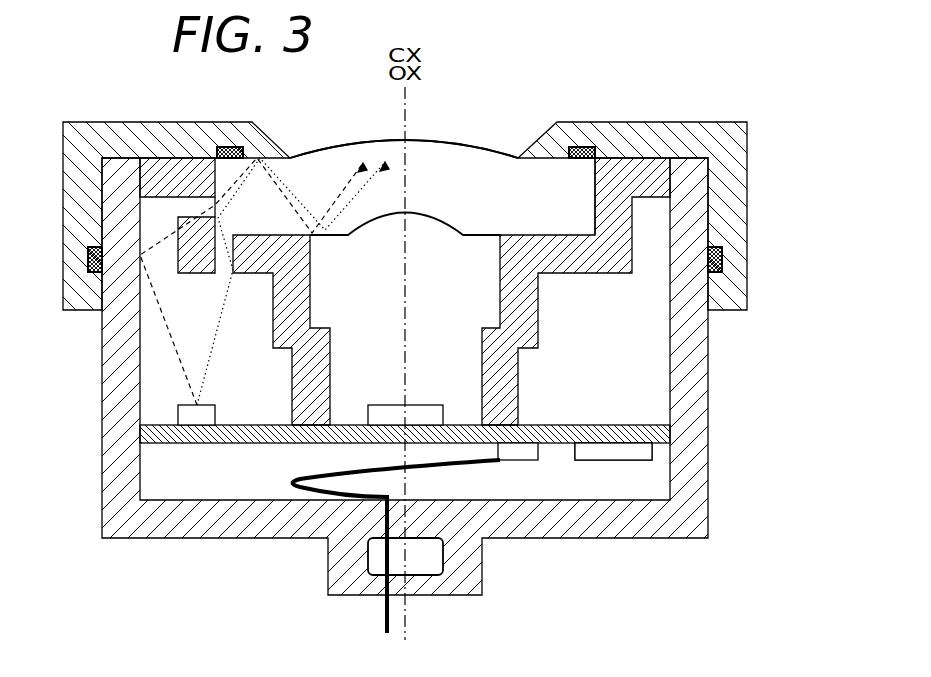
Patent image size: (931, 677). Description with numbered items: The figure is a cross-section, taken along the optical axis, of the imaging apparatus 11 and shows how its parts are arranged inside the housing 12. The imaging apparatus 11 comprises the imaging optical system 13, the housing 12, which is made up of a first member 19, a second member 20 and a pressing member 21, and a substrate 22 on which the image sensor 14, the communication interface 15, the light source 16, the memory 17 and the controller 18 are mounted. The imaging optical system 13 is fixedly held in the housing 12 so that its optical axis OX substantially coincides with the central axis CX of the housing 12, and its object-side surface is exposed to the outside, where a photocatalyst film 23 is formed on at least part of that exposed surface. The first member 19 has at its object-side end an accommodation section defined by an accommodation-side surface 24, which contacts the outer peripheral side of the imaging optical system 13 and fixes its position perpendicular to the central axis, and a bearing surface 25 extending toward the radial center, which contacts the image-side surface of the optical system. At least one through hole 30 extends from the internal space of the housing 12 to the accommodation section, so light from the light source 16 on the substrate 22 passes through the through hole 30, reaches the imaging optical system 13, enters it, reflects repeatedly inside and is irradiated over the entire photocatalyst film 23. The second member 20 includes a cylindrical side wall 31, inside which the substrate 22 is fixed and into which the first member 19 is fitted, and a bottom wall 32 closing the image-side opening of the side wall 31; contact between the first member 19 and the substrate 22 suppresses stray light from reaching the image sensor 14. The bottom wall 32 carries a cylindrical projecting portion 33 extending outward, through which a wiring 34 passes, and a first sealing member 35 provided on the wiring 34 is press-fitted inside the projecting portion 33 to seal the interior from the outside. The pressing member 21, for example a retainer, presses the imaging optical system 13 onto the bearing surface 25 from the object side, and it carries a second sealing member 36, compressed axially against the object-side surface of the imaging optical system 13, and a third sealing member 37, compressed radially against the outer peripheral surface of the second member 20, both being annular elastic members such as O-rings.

The imaging apparatus 11 is at (686, 42).
The housing 12 is at (812, 282).
The imaging optical system 13 is at (454, 195).
The image sensor 14 is at (437, 403).
The communication interface 15 is at (520, 462).
The light source 16 is at (208, 404).
The memory 17 is at (587, 462).
The controller 18 is at (613, 451).
The first member 19 is at (530, 333).
The second member 20 is at (700, 405).
The pressing member 21 is at (740, 292).
The substrate 22 is at (215, 444).
The photocatalyst film 23 is at (477, 143).
The accommodation-side surface 24 is at (595, 178).
The bearing surface 25 is at (548, 235).
The through hole 30 is at (200, 216).
The side wall 31 is at (102, 360).
The bottom wall 32 is at (207, 540).
The projecting portion 33 is at (473, 570).
The wiring 34 is at (385, 612).
The first sealing member 35 is at (423, 570).
The second sealing member 36 is at (230, 147).
The third sealing member 37 is at (88, 250).